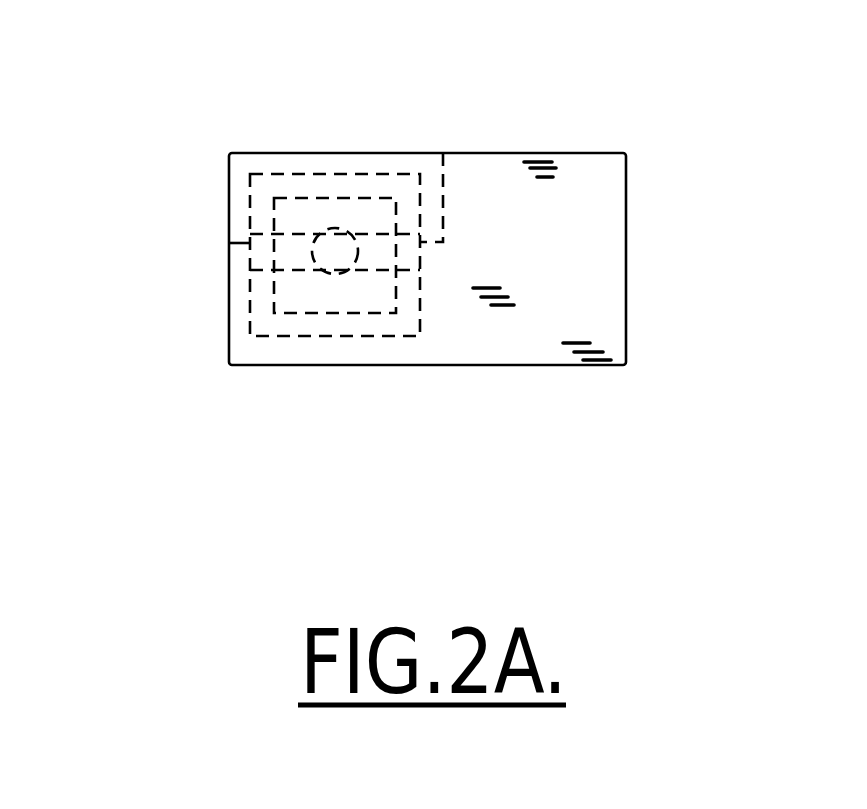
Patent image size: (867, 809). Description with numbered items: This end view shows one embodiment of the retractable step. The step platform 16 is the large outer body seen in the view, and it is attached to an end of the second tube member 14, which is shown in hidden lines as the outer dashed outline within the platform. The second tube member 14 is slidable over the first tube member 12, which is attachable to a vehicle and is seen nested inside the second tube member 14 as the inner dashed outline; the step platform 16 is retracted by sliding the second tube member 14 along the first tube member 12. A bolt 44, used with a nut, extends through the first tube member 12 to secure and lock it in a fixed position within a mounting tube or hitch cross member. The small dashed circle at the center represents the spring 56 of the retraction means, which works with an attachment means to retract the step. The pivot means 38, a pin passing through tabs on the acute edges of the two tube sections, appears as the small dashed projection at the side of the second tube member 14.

The first tube member 12 is at (328, 313).
The second tube member 14 is at (408, 177).
The step platform 16 is at (607, 153).
The pivot means 38 is at (444, 190).
The bolt 44 is at (287, 235).
The spring 56 is at (325, 228).